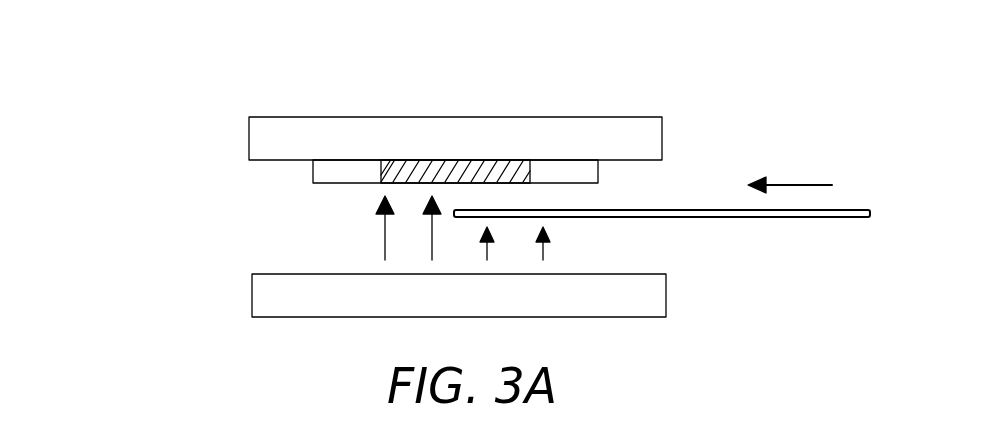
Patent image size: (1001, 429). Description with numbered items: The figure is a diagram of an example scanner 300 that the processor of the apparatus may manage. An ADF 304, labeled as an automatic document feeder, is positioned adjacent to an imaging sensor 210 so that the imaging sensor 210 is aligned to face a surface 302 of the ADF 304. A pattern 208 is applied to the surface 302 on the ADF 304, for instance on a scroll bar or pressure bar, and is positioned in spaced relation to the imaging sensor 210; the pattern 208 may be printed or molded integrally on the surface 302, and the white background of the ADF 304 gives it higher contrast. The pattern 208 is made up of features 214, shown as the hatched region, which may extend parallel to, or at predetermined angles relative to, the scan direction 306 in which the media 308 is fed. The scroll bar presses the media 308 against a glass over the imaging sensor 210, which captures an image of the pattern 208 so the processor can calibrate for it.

The scanner 300 is at (118, 62).
The surface 302 is at (278, 161).
The ADF 304 is at (248, 137).
The pattern 208 is at (313, 172).
The features 214 is at (380, 163).
The imaging sensor 210 is at (252, 300).
The scan direction 306 is at (790, 184).
The media 308 is at (773, 217).